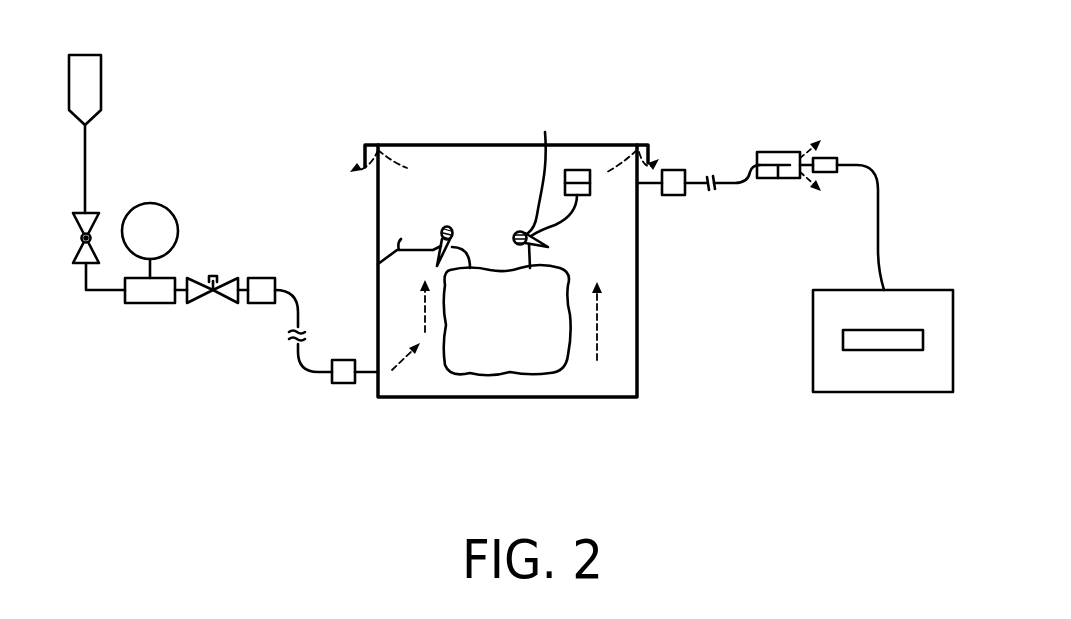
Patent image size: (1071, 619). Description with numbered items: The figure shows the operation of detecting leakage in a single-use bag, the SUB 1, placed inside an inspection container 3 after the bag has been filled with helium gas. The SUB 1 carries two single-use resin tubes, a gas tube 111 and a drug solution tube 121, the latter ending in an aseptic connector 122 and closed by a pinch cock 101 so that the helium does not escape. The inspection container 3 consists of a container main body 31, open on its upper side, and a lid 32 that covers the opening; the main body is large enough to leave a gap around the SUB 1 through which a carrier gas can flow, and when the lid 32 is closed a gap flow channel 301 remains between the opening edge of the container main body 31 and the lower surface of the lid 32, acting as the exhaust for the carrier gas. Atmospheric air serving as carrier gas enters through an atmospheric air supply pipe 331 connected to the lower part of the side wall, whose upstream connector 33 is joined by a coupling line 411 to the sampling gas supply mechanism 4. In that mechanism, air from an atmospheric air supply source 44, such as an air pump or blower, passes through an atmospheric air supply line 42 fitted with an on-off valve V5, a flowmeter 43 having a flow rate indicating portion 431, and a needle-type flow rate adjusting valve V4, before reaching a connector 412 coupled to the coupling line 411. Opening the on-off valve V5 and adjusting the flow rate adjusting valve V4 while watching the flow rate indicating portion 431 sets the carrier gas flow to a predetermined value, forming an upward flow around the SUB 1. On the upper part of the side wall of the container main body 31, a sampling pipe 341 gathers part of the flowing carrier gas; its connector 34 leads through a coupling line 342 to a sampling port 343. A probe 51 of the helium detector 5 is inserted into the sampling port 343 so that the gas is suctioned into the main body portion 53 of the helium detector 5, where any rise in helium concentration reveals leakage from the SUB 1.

The SUB 1 is at (520, 376).
The inspection container 3 is at (688, 378).
The sampling gas supply mechanism 4 is at (256, 116).
The helium detector 5 is at (921, 137).
The container main body 31 is at (637, 318).
The lid 32 is at (480, 145).
The connector 33 is at (340, 360).
The connector 34 is at (675, 170).
The atmospheric air supply line 42 is at (109, 291).
The flowmeter 43 is at (148, 304).
The atmospheric air supply source 44 is at (101, 77).
The probe 51 is at (776, 178).
The main body portion 53 is at (906, 290).
The pinch cock 101 is at (513, 232).
The gas tube 111 is at (378, 264).
The drug solution tube 121 is at (543, 186).
The aseptic connector 122 is at (586, 170).
The gap flow channel 301 is at (649, 150).
The atmospheric air supply pipe 331 is at (366, 376).
The sampling pipe 341 is at (650, 185).
The coupling line 342 is at (729, 180).
The sampling port 343 is at (796, 152).
The coupling line 411 is at (319, 375).
The connector 412 is at (265, 278).
The flow rate indicating portion 431 is at (166, 206).
The flow rate adjusting valve V4 is at (210, 297).
The on-off valve V5 is at (92, 212).